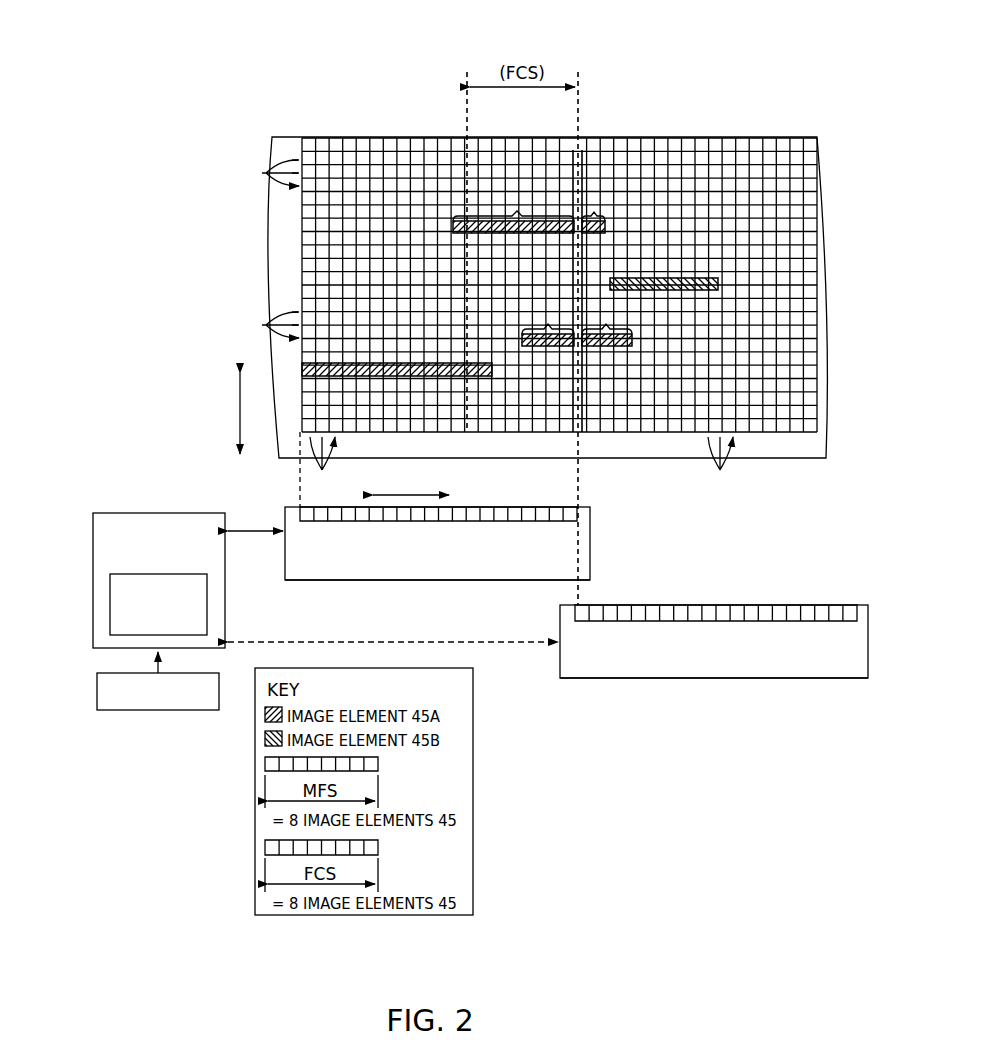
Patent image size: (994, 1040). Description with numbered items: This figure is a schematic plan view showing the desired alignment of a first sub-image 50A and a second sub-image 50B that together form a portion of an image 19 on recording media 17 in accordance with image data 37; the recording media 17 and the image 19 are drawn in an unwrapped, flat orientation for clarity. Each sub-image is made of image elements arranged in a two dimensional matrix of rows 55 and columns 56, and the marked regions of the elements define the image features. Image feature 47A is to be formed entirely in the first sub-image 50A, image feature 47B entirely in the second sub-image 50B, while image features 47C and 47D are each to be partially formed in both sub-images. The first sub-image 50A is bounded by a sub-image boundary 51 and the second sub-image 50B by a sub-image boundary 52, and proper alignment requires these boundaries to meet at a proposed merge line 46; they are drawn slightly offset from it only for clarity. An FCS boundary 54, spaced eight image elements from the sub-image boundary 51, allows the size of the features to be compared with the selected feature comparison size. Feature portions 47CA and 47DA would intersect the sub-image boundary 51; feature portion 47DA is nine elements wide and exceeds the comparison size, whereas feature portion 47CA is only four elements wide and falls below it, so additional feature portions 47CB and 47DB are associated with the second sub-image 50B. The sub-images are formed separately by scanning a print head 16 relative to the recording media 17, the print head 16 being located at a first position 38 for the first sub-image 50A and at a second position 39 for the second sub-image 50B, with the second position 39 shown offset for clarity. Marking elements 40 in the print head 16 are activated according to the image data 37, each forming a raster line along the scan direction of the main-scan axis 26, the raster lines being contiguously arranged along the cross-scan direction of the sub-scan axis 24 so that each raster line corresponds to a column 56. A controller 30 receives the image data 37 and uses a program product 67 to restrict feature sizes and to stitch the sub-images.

The print head 16 is at (354, 568).
The recording media 17 is at (537, 454).
The image 19 is at (658, 443).
The sub-scan axis 24 is at (398, 493).
The main-scan axis 26 is at (240, 405).
The controller 30 is at (93, 541).
The image data 37 is at (97, 691).
The first position 38 is at (434, 587).
The second position 39 is at (723, 698).
The marking element 40 is at (305, 518).
The proposed merge line 46 is at (584, 97).
The image feature 47A is at (391, 359).
The image feature 47B is at (669, 274).
The image feature 47C is at (579, 358).
The feature portion 47CA is at (552, 322).
The feature portion 47CB is at (609, 322).
The image feature 47D is at (539, 249).
The feature portion 47DA is at (513, 211).
The feature portion 47DB is at (604, 211).
The first sub-image 50A is at (387, 121).
The second sub-image 50B is at (726, 121).
The sub-image boundary 51 is at (573, 160).
The sub-image boundary 52 is at (584, 160).
The FCS boundary 54 is at (463, 108).
The rows 55 is at (268, 249).
The columns 56 is at (521, 466).
The program product 67 is at (110, 606).